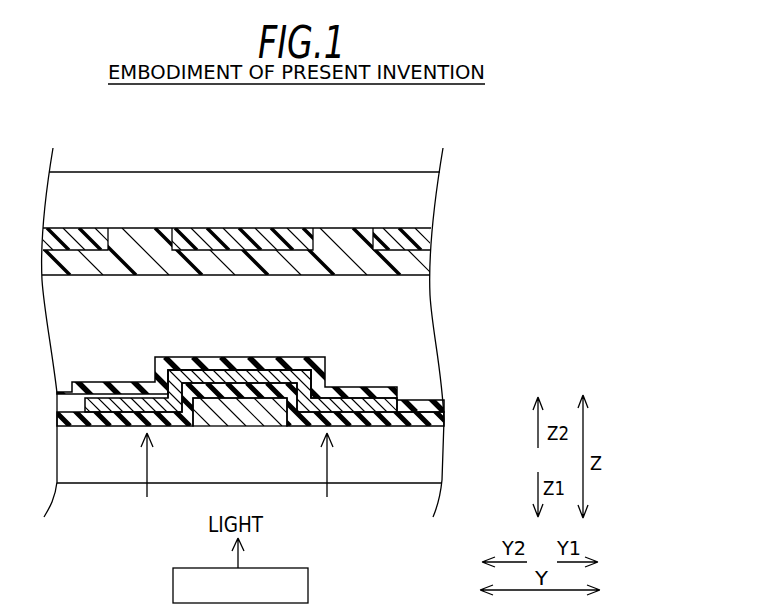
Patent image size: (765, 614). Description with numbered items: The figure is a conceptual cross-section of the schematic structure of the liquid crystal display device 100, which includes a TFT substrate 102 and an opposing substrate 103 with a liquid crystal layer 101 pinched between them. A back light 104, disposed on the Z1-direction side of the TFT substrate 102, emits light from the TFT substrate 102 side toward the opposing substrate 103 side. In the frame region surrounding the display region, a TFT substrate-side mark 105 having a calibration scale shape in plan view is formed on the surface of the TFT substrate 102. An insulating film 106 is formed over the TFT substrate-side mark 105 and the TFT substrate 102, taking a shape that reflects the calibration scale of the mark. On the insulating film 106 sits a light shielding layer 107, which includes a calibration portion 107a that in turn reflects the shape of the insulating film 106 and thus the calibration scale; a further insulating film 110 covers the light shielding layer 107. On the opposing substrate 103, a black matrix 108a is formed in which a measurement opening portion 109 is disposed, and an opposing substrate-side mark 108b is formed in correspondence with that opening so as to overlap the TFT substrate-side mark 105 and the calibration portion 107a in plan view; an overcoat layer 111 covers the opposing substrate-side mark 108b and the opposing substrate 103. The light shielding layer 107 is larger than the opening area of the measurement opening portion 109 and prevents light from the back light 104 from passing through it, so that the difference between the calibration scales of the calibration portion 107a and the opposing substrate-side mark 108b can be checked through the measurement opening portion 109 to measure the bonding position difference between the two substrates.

The liquid crystal display device 100 is at (447, 137).
The liquid crystal layer 101 is at (417, 328).
The TFT substrate 102 is at (432, 462).
The opposing substrate 103 is at (405, 201).
The back light 104 is at (310, 584).
The TFT substrate-side mark 105 is at (279, 427).
The insulating film 106 is at (433, 423).
The light shielding layer 107 is at (357, 405).
The calibration portion 107a is at (315, 357).
The black matrix 108a is at (68, 232).
The opposing substrate-side mark 108b is at (245, 237).
The measurement opening portion 109 is at (143, 243).
The insulating film 110 is at (433, 409).
The overcoat layer 111 is at (405, 257).